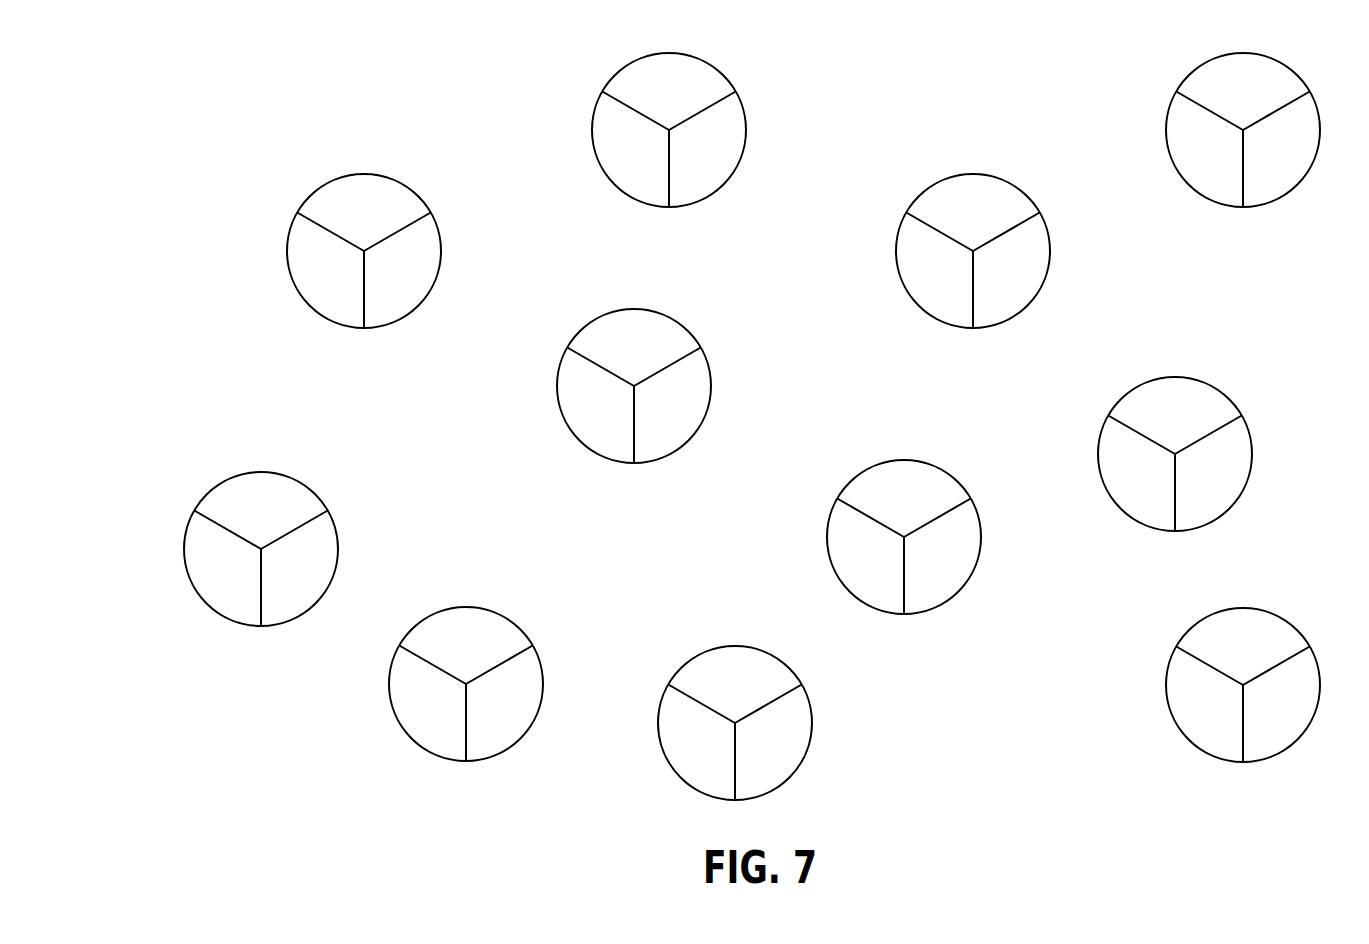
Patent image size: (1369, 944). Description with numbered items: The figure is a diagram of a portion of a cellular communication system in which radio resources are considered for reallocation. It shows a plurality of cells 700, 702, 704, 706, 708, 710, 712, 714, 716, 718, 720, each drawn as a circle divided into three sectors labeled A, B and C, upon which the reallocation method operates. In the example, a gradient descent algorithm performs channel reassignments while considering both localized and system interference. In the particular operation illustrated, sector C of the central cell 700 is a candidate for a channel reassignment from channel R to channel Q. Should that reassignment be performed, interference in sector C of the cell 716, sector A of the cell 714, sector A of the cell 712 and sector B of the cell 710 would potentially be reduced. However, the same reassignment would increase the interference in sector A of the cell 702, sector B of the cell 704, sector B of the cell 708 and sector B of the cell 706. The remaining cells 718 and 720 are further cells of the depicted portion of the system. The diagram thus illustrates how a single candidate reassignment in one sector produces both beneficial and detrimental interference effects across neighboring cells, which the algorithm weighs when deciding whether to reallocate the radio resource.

The cell 700 is at (683, 324).
The cell 702 is at (413, 189).
The cell 704 is at (1022, 189).
The cell 706 is at (784, 661).
The cell 708 is at (1292, 623).
The cell 710 is at (953, 475).
The cell 712 is at (1224, 392).
The cell 714 is at (718, 68).
The cell 716 is at (310, 487).
The cell 718 is at (515, 622).
The cell 720 is at (1292, 68).